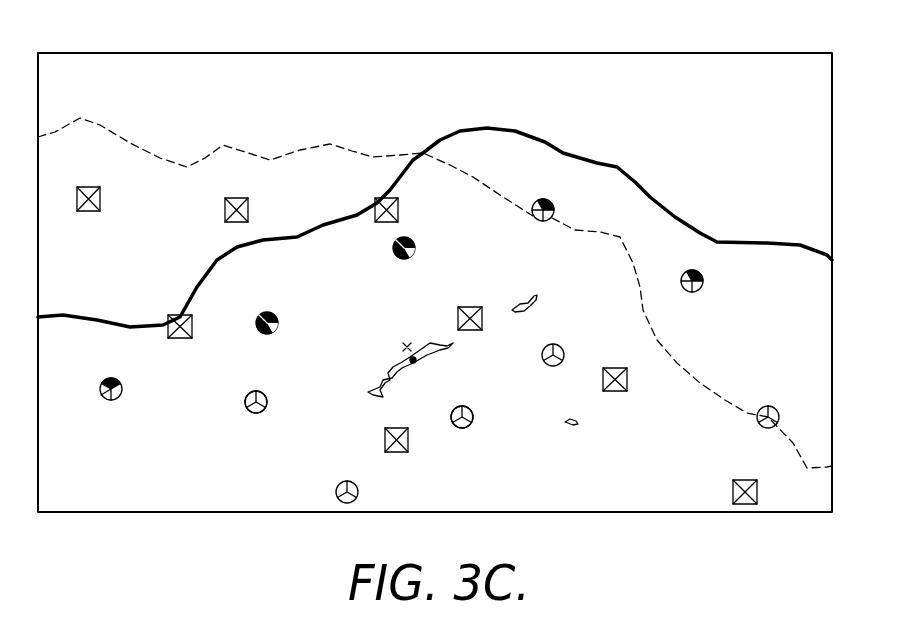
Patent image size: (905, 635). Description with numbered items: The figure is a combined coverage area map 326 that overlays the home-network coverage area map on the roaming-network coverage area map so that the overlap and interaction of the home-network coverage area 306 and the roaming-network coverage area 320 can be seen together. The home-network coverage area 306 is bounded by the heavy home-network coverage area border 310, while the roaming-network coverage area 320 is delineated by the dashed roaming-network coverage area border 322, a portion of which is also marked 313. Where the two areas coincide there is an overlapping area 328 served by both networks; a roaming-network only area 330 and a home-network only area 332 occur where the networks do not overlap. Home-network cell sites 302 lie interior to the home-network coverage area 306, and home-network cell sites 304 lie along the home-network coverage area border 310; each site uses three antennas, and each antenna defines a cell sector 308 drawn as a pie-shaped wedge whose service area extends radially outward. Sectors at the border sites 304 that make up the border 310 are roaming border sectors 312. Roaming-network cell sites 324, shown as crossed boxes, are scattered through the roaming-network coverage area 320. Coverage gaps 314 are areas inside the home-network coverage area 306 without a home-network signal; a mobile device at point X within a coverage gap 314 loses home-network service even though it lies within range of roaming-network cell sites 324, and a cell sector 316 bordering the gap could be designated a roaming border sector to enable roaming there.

The combined coverage area map 326 is at (375, 53).
The home-network coverage area border 310 is at (653, 202).
The roaming-network coverage area border 322 is at (353, 150).
The dashed path segment 313 is at (681, 284).
The roaming border sector 312 is at (534, 203).
The home-network cell site 304 is at (412, 241).
The roaming-network cell site 324 is at (100, 197).
The home-network cell site 302 is at (247, 405).
The cell sector 308 is at (266, 405).
The cell sector 316 is at (455, 412).
The coverage gap 314 is at (390, 368).
The roaming-network coverage area 320 is at (73, 259).
The roaming-network only area 330 is at (184, 247).
The overlapping area 328 is at (353, 271).
The home-network only area 332 is at (778, 294).
The home-network coverage area 306 is at (683, 464).